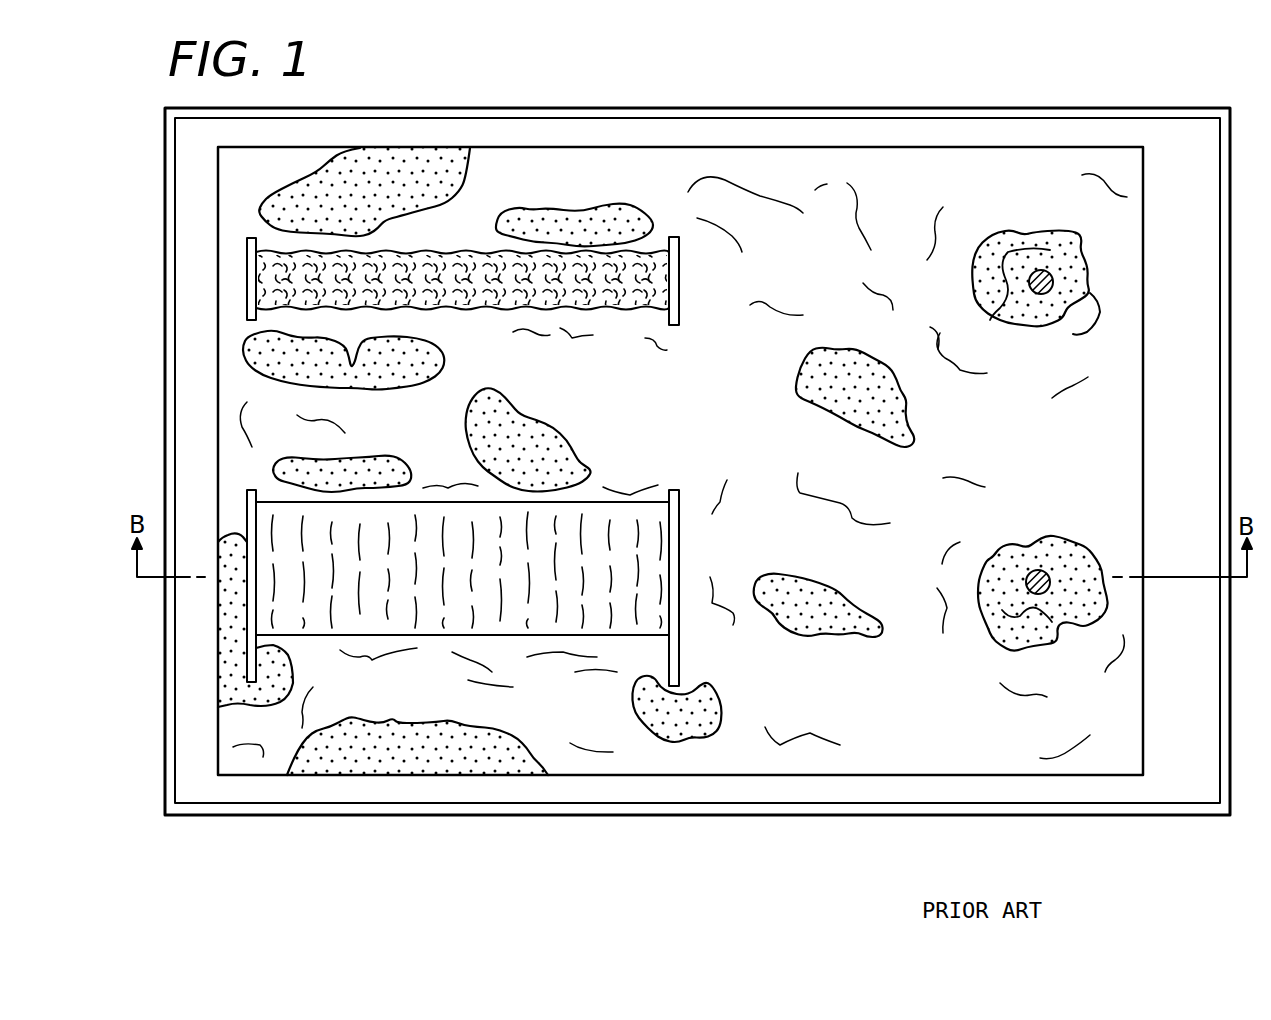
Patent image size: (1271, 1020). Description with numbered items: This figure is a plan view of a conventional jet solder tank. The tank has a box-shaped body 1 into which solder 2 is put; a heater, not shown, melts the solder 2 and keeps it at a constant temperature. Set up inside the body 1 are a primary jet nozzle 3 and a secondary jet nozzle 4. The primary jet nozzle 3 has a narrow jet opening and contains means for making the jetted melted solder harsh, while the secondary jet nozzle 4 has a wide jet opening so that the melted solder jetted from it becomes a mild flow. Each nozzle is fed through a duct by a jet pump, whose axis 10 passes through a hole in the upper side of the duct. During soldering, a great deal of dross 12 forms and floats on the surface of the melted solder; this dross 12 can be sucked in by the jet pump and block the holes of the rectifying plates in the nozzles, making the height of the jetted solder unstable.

The body 1 is at (773, 128).
The solder 2 is at (778, 459).
The primary jet nozzle 3 is at (679, 276).
The secondary jet nozzle 4 is at (679, 548).
The axis 10 is at (1039, 270).
The dross 12 is at (470, 423).